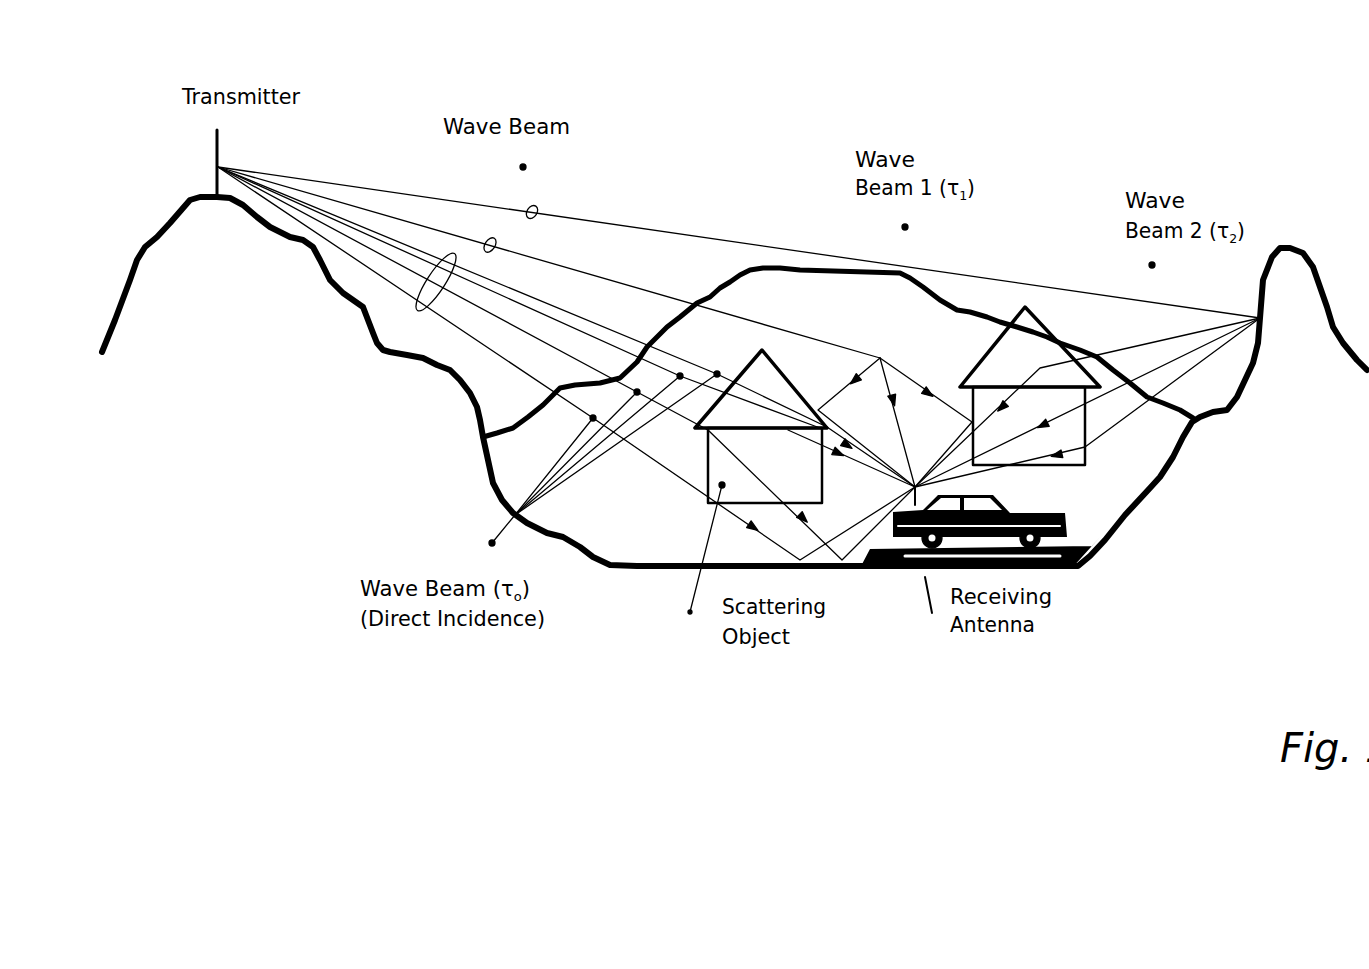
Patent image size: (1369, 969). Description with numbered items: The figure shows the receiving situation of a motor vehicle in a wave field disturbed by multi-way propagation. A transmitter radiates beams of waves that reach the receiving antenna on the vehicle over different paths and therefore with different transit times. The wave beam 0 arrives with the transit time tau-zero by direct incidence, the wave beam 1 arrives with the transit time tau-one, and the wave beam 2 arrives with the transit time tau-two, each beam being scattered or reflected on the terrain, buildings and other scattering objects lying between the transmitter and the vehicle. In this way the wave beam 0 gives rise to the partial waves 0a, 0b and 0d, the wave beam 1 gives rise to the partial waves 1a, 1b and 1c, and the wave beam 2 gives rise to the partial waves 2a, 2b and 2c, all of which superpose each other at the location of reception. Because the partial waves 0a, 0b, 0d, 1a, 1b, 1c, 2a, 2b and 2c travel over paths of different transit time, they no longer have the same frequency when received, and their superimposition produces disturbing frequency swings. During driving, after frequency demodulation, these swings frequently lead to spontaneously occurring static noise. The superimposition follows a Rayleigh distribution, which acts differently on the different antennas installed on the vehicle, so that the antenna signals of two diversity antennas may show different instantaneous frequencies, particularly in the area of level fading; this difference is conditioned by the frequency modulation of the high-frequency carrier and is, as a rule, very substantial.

The wave beam 0 is at (523, 167).
The wave beam 1 is at (523, 167).
The wave beam 2 is at (523, 167).
The partial wave 0a is at (754, 489).
The partial wave 0b is at (811, 495).
The beam 0 direct path d 0d is at (871, 455).
The partial wave 1a is at (905, 227).
The partial wave 1b is at (905, 227).
The partial wave 1c is at (905, 227).
The partial wave 2a is at (1152, 265).
The partial wave 2b is at (1152, 265).
The partial wave 2c is at (1152, 265).